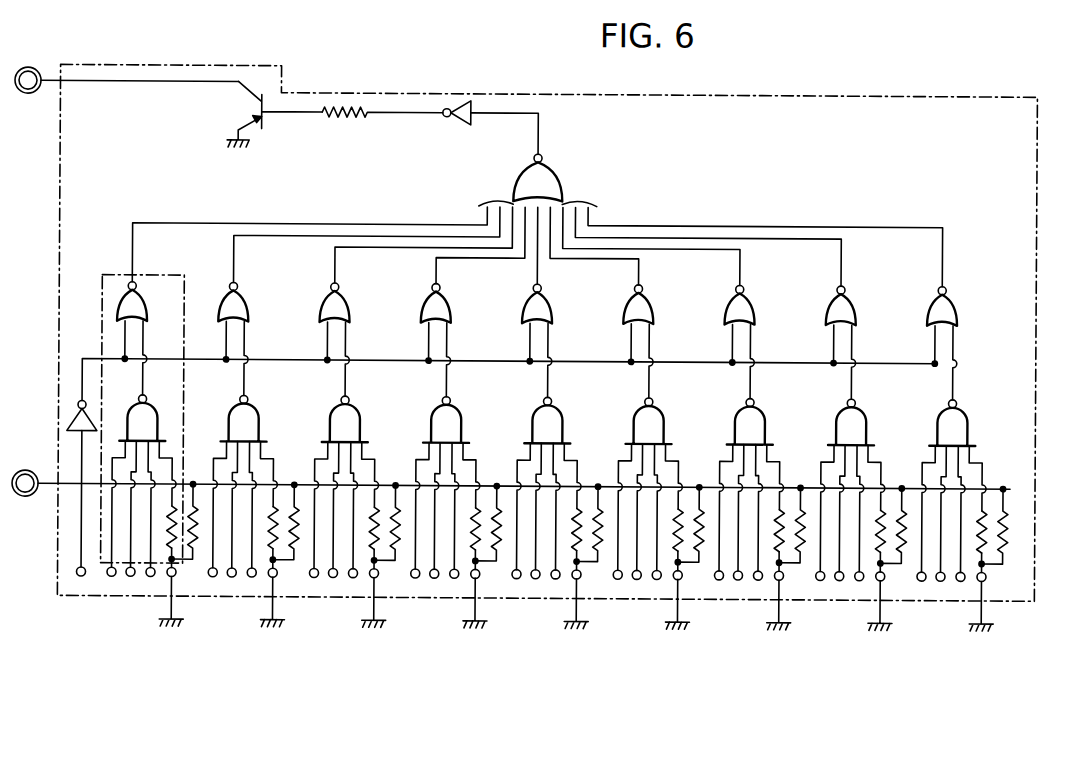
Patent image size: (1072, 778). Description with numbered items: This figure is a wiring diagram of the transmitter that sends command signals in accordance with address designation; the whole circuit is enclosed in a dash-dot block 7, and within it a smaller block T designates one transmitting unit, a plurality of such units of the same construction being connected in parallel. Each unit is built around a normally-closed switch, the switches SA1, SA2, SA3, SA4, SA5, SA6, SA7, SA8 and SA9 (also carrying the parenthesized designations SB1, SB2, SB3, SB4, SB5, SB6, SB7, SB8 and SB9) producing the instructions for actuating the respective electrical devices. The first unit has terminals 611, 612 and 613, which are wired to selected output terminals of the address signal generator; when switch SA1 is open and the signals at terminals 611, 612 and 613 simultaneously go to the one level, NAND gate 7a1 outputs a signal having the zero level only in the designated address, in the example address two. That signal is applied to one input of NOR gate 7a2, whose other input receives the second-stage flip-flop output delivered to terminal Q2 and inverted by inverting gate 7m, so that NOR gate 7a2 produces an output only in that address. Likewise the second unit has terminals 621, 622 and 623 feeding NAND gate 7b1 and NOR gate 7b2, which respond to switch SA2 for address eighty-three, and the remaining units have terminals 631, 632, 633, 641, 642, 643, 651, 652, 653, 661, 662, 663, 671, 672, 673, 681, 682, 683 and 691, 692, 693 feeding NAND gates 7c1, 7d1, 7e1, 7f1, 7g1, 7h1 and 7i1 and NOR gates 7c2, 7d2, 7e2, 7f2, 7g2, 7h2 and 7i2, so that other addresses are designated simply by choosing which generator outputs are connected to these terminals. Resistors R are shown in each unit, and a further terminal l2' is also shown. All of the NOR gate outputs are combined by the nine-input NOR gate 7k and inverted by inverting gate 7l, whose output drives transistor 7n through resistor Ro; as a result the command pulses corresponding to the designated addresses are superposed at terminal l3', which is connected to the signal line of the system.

The decoder circuit block 7 is at (948, 90).
The transistor 7n is at (256, 110).
The resistor Ro is at (356, 113).
The inverting gate 7l is at (467, 123).
The NOR gate 7k is at (562, 180).
The inverting gate 7m is at (81, 402).
The transmitting unit T is at (186, 274).
The resistor R is at (584, 524).
The terminal Q2 is at (84, 576).
The input line l2' is at (510, 474).
The terminal l3' is at (124, 103).
The NOR gate 7a2 is at (148, 338).
The NOR gate 7b2 is at (249, 338).
The NOR gate 7c2 is at (350, 339).
The NOR gate 7d2 is at (451, 340).
The NOR gate 7e2 is at (553, 340).
The NOR gate 7f2 is at (654, 341).
The NOR gate 7g2 is at (755, 341).
The NOR gate 7h2 is at (856, 342).
The NOR gate 7i2 is at (958, 343).
The NAND gate 7a1 is at (149, 416).
The NAND gate 7b1 is at (251, 416).
The NAND gate 7c1 is at (352, 417).
The NAND gate 7d1 is at (453, 418).
The NAND gate 7e1 is at (554, 418).
The NAND gate 7f1 is at (656, 419).
The NAND gate 7g1 is at (757, 419).
The NAND gate 7h1 is at (858, 420).
The NAND gate 7i1 is at (959, 421).
The terminal 611 is at (106, 601).
The terminal 612 is at (119, 615).
The terminal 613 is at (137, 629).
The terminal 621 is at (207, 602).
The terminal 622 is at (220, 616).
The terminal 623 is at (238, 630).
The terminal 631 is at (309, 602).
The terminal 632 is at (321, 616).
The terminal 633 is at (339, 630).
The terminal 641 is at (410, 603).
The terminal 642 is at (423, 617).
The terminal 643 is at (441, 631).
The terminal 651 is at (511, 604).
The terminal 652 is at (524, 618).
The terminal 653 is at (542, 632).
The terminal 661 is at (612, 604).
The terminal 662 is at (625, 618).
The terminal 663 is at (643, 632).
The terminal 671 is at (714, 605).
The terminal 672 is at (726, 619).
The terminal 673 is at (744, 633).
The terminal 681 is at (815, 605).
The terminal 682 is at (828, 619).
The terminal 683 is at (846, 634).
The terminal 691 is at (916, 606).
The terminal 692 is at (929, 620).
The terminal 693 is at (947, 634).
The normally-closed switch SA1 is at (173, 641).
The normally-closed switch SA2 is at (274, 642).
The normally-closed switch SA3 is at (375, 643).
The normally-closed switch SA4 is at (476, 643).
The normally-closed switch SA5 is at (578, 644).
The normally-closed switch SA6 is at (679, 645).
The normally-closed switch SA7 is at (780, 645).
The normally-closed switch SA8 is at (881, 646).
The normally-closed switch SA9 is at (983, 646).
The switch SB1 is at (169, 730).
The switch SB2 is at (271, 731).
The switch SB3 is at (372, 731).
The switch SB4 is at (473, 732).
The switch SB5 is at (574, 732).
The switch SB6 is at (676, 733).
The switch SB7 is at (777, 734).
The switch SB8 is at (878, 734).
The switch SB9 is at (979, 735).